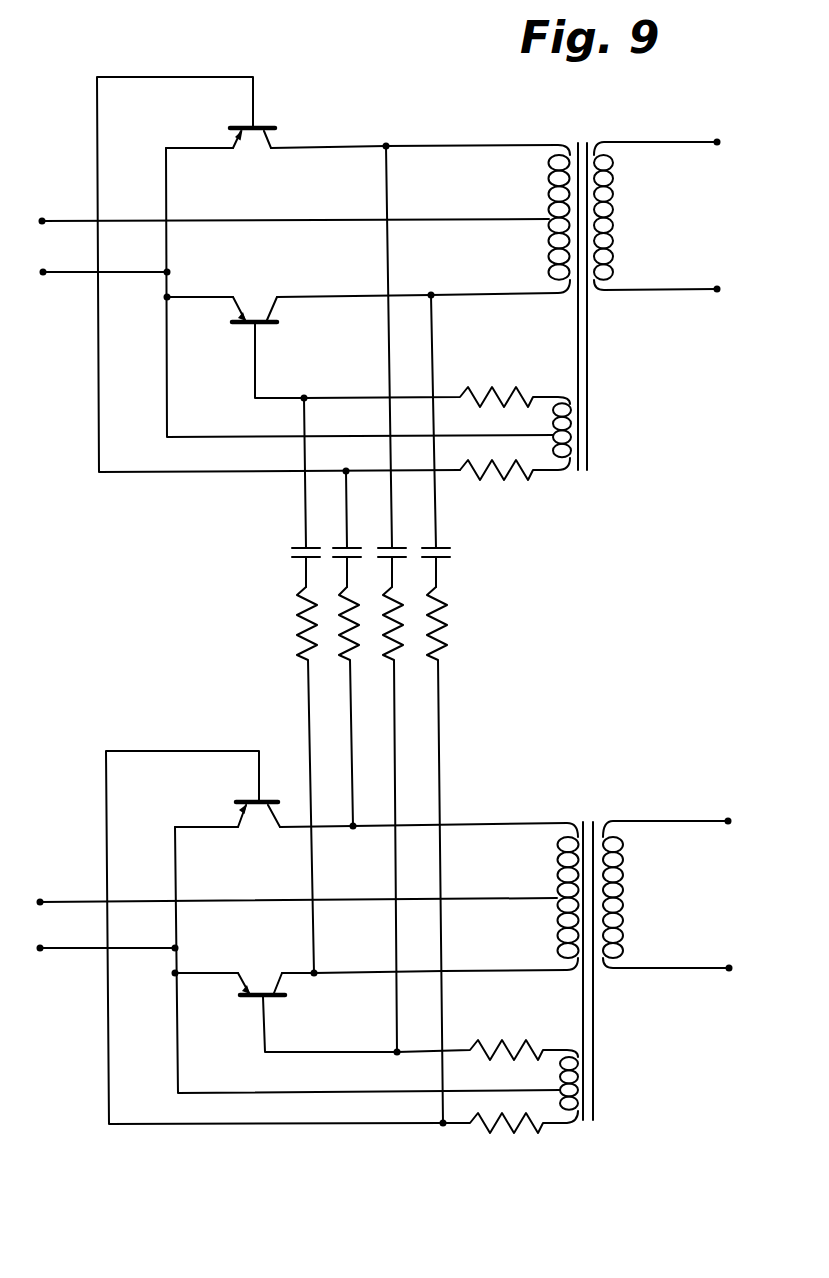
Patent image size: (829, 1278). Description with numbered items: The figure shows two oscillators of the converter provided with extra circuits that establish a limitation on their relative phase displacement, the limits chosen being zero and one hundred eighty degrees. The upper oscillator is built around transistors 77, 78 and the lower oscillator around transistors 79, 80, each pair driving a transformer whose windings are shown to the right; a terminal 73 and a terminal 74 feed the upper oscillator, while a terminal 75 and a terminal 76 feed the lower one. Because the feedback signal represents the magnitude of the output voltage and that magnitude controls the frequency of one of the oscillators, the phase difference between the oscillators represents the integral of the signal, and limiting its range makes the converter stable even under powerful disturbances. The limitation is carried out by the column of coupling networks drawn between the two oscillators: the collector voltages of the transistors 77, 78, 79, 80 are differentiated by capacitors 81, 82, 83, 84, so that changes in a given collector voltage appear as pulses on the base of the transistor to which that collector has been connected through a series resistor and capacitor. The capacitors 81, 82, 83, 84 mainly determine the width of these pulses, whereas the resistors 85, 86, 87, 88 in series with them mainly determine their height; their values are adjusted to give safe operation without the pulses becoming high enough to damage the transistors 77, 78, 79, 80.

The input terminal 73 is at (42, 215).
The input terminal 74 is at (42, 280).
The input terminal 75 is at (40, 897).
The input terminal 76 is at (41, 955).
The transistor 77 is at (272, 127).
The transistor 78 is at (262, 328).
The transistor 79 is at (250, 800).
The transistor 80 is at (273, 998).
The capacitor 81 is at (298, 546).
The capacitor 82 is at (342, 546).
The capacitor 83 is at (393, 547).
The capacitor 84 is at (440, 546).
The resistor 85 is at (298, 635).
The resistor 86 is at (340, 632).
The resistor 87 is at (382, 632).
The resistor 88 is at (446, 637).